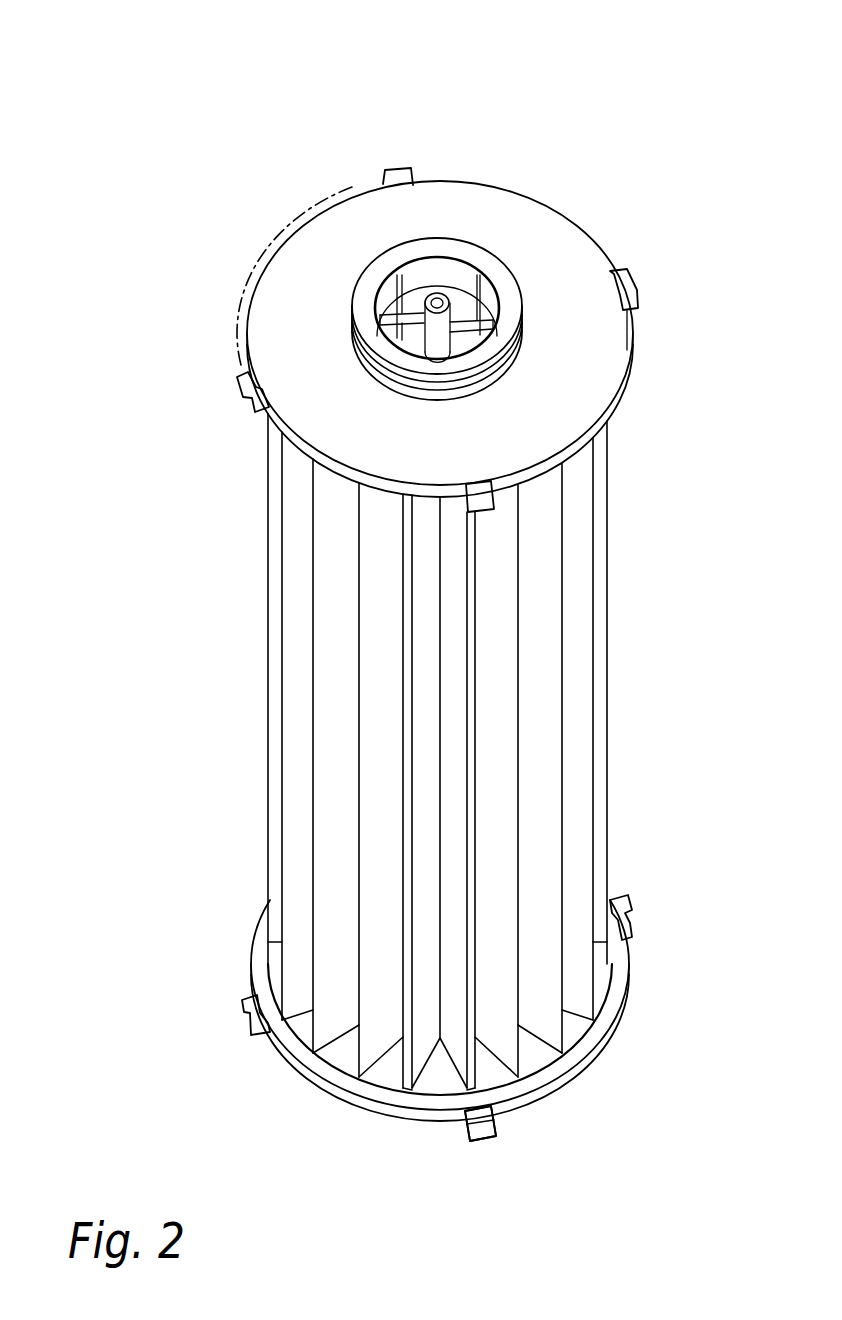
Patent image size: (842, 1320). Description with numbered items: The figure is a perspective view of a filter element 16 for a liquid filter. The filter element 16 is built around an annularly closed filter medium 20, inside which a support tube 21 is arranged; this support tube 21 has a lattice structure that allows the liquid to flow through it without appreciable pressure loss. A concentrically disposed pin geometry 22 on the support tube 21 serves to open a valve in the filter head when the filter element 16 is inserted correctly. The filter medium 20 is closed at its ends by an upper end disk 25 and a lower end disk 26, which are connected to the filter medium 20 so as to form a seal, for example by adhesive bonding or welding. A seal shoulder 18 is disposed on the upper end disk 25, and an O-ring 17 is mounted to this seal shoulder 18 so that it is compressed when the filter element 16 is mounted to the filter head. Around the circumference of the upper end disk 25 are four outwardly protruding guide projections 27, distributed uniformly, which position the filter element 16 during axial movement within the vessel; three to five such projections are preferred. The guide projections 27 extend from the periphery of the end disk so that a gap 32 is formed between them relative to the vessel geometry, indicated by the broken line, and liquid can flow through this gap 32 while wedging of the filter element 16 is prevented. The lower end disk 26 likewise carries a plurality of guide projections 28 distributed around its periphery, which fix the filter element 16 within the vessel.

The filter element 16 is at (206, 160).
The O-ring 17 is at (493, 372).
The seal shoulder 18 is at (510, 308).
The filter medium 20 is at (583, 783).
The support tube 21 is at (412, 303).
The pin geometry 22 is at (437, 296).
The upper end disk 25 is at (500, 207).
The lower end disk 26 is at (560, 1068).
The guide projections 27 is at (396, 170).
The guide projections 28 is at (637, 903).
The gap 32 is at (257, 274).